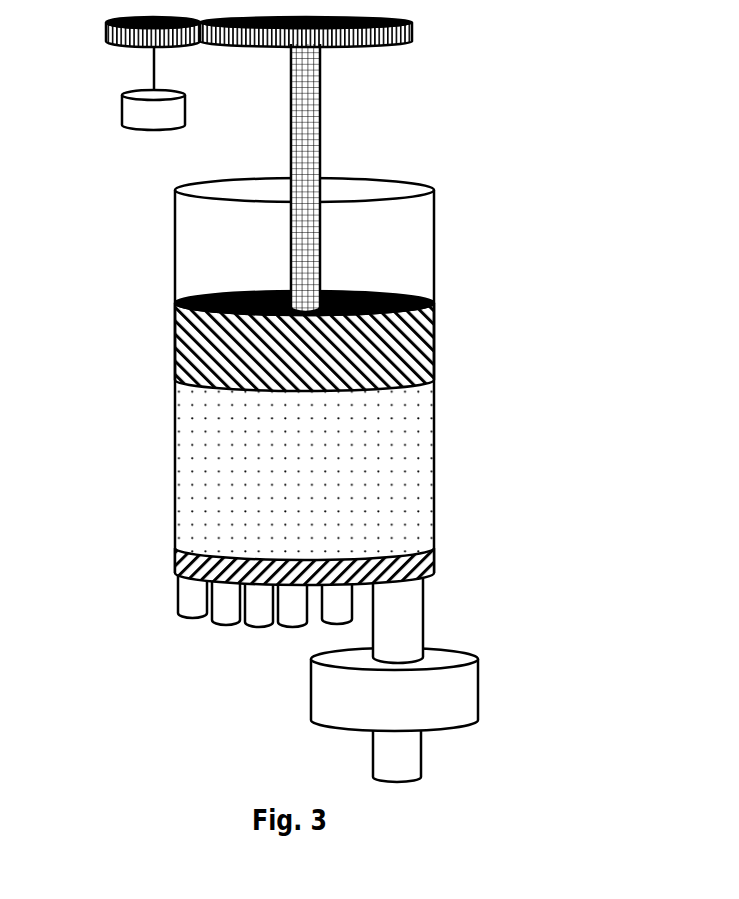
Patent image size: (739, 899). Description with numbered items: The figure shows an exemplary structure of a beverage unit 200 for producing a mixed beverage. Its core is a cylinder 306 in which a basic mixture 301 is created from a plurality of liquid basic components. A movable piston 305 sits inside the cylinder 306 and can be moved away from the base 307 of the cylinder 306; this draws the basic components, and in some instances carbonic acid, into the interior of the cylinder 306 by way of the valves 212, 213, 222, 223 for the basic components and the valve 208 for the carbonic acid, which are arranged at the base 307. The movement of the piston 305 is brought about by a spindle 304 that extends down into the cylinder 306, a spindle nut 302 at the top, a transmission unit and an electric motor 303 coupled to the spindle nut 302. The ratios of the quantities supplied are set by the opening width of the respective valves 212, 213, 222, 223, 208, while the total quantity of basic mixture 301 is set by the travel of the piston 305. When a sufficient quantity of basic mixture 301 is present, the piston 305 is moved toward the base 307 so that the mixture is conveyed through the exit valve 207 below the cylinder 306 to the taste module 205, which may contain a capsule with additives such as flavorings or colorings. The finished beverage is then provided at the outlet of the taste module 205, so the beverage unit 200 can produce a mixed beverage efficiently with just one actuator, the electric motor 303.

The beverage unit 200 is at (505, 89).
The basic mixture 301 is at (187, 437).
The spindle nut 302 is at (410, 37).
The electric motor 303 is at (122, 113).
The spindle 304 is at (312, 128).
The movable piston 305 is at (435, 343).
The cylinder 306 is at (435, 481).
The base 307 is at (175, 556).
The exit valve 207 is at (423, 613).
The taste module 205 is at (480, 697).
The valve 212 is at (178, 603).
The valve 213 is at (213, 622).
The valve 222 is at (248, 624).
The valve 223 is at (292, 623).
The valve 208 is at (337, 598).